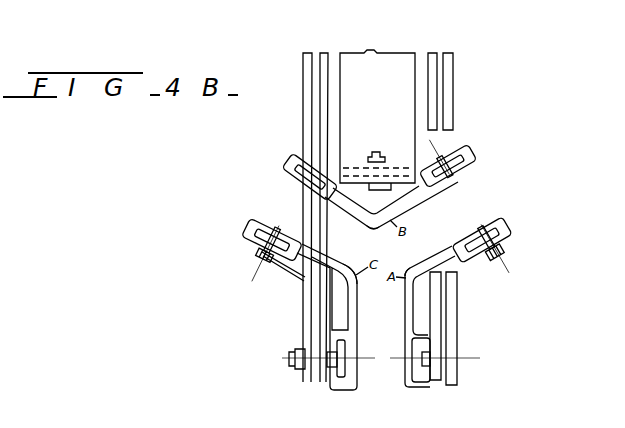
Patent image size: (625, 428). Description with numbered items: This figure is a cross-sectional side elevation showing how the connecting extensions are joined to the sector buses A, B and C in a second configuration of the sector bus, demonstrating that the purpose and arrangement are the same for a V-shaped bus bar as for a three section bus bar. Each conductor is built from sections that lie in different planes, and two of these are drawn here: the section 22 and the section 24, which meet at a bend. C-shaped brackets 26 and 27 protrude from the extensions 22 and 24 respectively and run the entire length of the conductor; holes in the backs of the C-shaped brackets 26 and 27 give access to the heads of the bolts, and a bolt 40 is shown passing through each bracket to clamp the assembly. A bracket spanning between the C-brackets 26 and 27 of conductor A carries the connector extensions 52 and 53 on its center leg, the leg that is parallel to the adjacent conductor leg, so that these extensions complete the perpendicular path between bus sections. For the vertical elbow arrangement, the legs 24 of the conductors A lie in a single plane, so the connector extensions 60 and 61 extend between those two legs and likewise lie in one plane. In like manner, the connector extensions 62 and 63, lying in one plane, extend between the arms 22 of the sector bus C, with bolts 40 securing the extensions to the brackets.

The conductor section 22 is at (353, 211).
The conductor section 24 is at (413, 206).
The C-shaped bracket 26 is at (297, 152).
The C-shaped bracket 27 is at (473, 151).
The bolt 40 is at (442, 153).
The connector extension 52 is at (406, 161).
The connector extension 53 is at (398, 184).
The connector extension 60 is at (434, 382).
The connector extension 61 is at (452, 334).
The connector extension 62 is at (308, 379).
The connector extension 63 is at (327, 382).